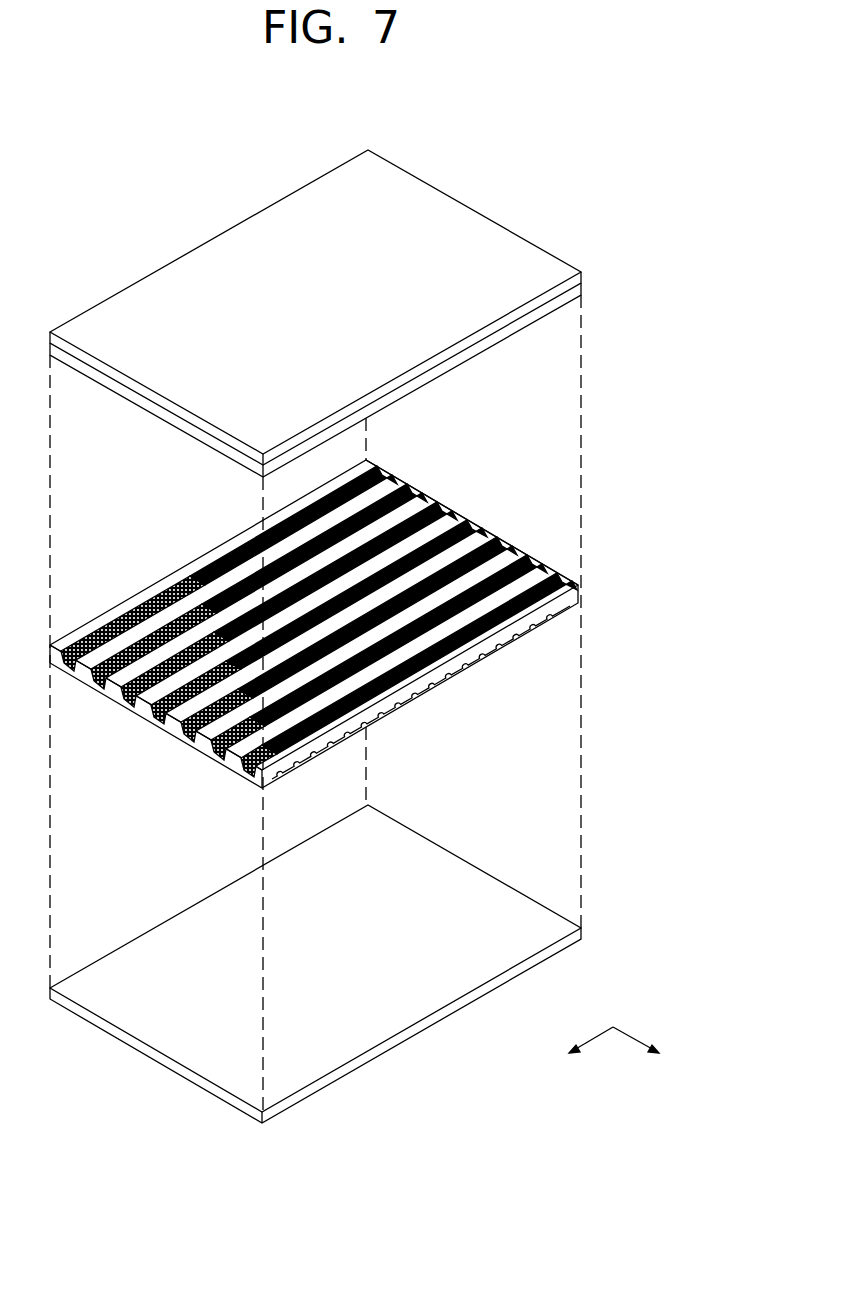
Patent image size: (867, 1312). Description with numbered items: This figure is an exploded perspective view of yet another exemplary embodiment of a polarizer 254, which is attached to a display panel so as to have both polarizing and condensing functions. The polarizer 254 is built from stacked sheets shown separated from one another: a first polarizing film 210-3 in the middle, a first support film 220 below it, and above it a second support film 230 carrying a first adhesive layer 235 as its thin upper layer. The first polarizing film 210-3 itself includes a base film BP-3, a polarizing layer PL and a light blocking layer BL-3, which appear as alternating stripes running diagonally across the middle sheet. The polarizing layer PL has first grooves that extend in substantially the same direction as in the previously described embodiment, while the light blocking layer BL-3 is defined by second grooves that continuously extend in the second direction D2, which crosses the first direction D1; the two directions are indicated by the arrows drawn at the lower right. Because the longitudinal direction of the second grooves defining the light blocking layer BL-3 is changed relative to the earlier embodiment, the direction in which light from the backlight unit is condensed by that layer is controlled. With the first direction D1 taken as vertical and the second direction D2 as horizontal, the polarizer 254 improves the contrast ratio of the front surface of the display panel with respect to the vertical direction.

The polarizer 254 is at (531, 157).
The first adhesive layer 235 is at (583, 274).
The second support film 230 is at (583, 288).
The first polarizing film 210-3 is at (408, 624).
The light blocking layer BL-3 is at (522, 548).
The base film BP-3 is at (540, 568).
The polarizing layer PL is at (567, 610).
The first support film 220 is at (583, 930).
The first direction D1 is at (648, 1054).
The second direction D2 is at (580, 1054).